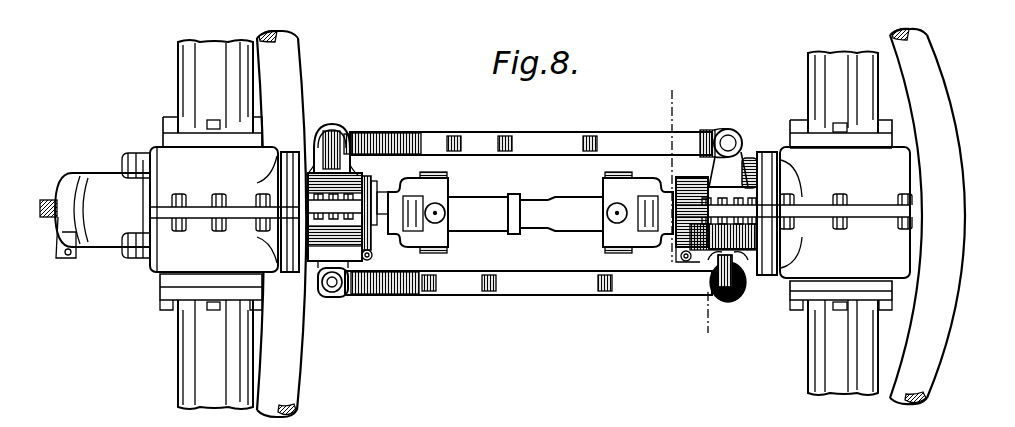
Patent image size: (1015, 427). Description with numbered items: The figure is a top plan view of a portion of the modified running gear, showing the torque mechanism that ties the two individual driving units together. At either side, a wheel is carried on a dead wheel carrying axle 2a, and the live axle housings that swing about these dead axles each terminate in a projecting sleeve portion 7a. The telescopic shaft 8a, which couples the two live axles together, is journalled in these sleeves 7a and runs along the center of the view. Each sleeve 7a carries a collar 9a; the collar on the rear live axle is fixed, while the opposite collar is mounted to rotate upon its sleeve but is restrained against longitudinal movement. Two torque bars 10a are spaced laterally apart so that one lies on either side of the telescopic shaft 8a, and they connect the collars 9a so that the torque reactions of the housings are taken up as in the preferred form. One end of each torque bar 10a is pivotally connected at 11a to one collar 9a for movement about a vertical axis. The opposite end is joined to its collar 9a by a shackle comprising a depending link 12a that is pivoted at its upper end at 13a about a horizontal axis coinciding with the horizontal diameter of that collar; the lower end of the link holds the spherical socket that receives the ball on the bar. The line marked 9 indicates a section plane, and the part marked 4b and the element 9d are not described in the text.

The dead wheel carrying axle 2a is at (300, 388).
The wheel spoke 4b is at (185, 360).
The projecting sleeve portion 7a is at (369, 180).
The telescopic shaft 8a is at (538, 203).
The collar 9a is at (293, 248).
The bearing bracket 9d is at (737, 184).
The torque bar 10a is at (522, 124).
The pivotal connection 11a is at (731, 131).
The depending link 12a is at (311, 147).
The pivot 13a is at (319, 126).
The section line 9- 9 is at (625, 88).